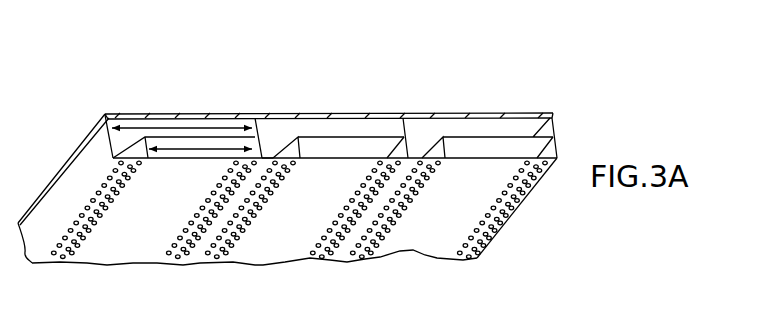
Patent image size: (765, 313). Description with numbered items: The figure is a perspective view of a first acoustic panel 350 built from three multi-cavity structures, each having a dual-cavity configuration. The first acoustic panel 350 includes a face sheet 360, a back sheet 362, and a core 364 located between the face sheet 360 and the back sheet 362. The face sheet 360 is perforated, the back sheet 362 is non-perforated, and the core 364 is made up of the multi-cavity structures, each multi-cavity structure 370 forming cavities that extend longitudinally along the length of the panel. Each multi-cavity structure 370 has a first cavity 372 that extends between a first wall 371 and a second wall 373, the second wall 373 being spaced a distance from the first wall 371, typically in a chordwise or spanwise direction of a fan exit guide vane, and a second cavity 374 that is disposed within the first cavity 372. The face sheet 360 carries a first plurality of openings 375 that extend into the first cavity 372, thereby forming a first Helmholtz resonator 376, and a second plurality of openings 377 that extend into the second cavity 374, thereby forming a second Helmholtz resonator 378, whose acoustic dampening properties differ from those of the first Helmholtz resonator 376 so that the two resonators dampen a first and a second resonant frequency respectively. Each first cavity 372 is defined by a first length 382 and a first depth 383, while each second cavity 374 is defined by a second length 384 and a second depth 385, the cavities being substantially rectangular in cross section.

The first acoustic panel 350 is at (240, 92).
The face sheet 360 is at (417, 247).
The back sheet 362 is at (541, 112).
The core 364 is at (556, 158).
The multi-cavity structure 370 is at (308, 118).
The first wall 371 is at (246, 126).
The first cavity 372 is at (272, 118).
The second wall 373 is at (383, 137).
The second cavity 374 is at (322, 151).
The first plurality of openings 375 is at (197, 262).
The first Helmholtz resonator 376 is at (333, 125).
The second plurality of openings 377 is at (310, 259).
The second Helmholtz resonator 378 is at (362, 147).
The first length 382 is at (133, 126).
The first depth 383 is at (165, 115).
The second length 384 is at (173, 150).
The second depth 385 is at (202, 164).